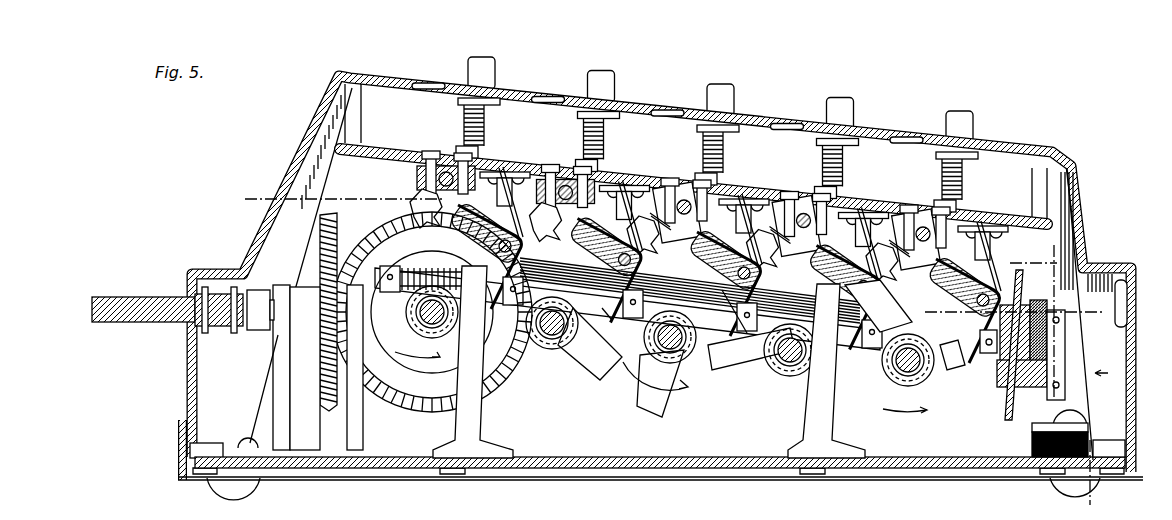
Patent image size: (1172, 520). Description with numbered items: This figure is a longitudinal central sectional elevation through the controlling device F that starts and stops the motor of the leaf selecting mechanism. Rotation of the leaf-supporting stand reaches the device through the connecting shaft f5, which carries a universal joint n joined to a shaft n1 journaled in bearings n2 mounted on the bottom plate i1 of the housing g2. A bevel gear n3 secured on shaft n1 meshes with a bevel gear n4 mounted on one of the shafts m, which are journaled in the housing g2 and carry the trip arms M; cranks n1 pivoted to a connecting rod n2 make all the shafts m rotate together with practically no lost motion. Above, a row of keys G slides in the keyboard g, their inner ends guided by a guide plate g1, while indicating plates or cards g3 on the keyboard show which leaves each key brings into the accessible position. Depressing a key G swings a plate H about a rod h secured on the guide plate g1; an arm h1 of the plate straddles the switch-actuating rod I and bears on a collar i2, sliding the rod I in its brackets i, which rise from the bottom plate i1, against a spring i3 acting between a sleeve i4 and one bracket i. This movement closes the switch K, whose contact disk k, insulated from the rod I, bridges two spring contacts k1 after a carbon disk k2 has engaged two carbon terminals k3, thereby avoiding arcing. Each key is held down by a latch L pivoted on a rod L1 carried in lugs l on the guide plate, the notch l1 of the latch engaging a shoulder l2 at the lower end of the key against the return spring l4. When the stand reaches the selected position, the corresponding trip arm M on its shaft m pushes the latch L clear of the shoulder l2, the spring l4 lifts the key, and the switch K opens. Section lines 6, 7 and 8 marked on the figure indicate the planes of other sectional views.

The controlling device F is at (660, 288).
The section line 8- 8 is at (812, 285).
The connecting shaft f5 is at (158, 296).
The universal joint n is at (222, 326).
The shaft n1 is at (249, 290).
The bearings n2 is at (347, 426).
The bevel gear n3 is at (320, 228).
The bevel gear n4 is at (432, 312).
The shafts m is at (407, 333).
The trip arms M is at (637, 397).
The brackets i is at (472, 418).
The bottom plate i1 is at (683, 456).
The collar i2 is at (508, 303).
The spring i3 is at (433, 270).
The sleeve i4 is at (385, 296).
The rod h is at (1010, 280).
The arm h1 is at (728, 312).
The plate H is at (750, 238).
The latches L is at (726, 260).
The rods L1 is at (810, 195).
The lugs l is at (417, 172).
The notches l1 is at (780, 225).
The shoulders l2 is at (742, 216).
The spring l4 is at (877, 173).
The keys G is at (590, 79).
The keyboard g is at (1008, 152).
The guide plate g1 is at (995, 216).
The housing g2 is at (1088, 212).
The indicating plates g3 is at (793, 99).
The section line 6- 6 is at (1011, 294).
The section line 7- 7 is at (1078, 374).
The contact disk k is at (1003, 410).
The spring contacts k1 is at (1040, 305).
The carbon disk k2 is at (1013, 390).
The carbon terminals k3 is at (1048, 386).
The switch K is at (1012, 348).
The switch-actuating rod I is at (952, 362).